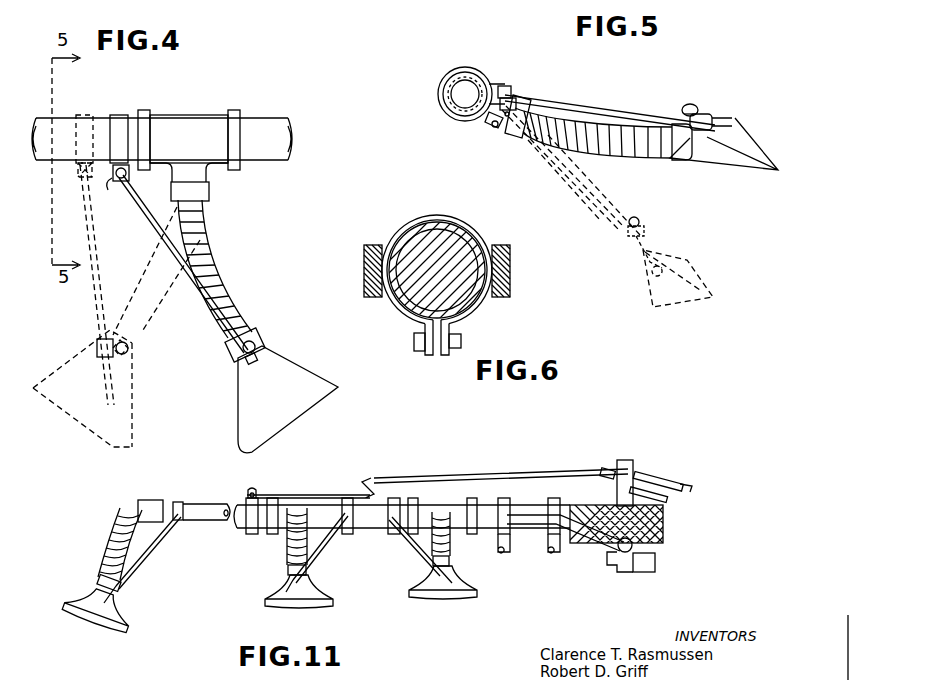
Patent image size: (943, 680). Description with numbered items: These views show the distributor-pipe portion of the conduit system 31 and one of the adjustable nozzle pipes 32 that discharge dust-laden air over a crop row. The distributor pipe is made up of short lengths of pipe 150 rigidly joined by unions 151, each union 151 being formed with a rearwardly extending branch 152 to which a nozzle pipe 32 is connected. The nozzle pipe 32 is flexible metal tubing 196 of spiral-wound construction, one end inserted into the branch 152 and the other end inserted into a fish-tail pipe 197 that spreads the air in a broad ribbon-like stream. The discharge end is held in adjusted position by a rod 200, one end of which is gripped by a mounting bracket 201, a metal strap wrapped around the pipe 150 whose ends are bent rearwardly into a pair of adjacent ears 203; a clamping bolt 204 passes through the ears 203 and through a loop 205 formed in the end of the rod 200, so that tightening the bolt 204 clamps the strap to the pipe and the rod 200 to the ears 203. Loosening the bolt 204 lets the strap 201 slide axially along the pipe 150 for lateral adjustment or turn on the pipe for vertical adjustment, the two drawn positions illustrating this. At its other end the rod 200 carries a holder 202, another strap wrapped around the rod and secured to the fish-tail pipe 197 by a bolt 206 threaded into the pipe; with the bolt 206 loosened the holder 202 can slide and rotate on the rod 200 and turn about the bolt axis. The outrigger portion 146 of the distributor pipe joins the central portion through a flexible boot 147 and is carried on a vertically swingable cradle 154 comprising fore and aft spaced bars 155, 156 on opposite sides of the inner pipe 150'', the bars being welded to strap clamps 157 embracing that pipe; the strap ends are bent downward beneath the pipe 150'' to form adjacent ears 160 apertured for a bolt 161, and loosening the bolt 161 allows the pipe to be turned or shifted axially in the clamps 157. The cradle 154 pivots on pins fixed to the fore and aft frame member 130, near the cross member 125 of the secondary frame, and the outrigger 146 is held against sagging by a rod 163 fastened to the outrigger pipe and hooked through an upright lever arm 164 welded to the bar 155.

In FIG. 4, the conduit system 31 is at (270, 108).
In FIG. 4, the nozzle pipe 32 is at (205, 318).
In FIG. 5, the nozzle pipe 32 is at (643, 160).
In FIG. 11, the nozzle pipe 32 is at (136, 633).
In FIG. 11, the cross member 125 is at (655, 565).
In FIG. 11, the fore and aft extending member 130 is at (624, 570).
In FIG. 11, the outrigger portion 146 is at (470, 603).
In FIG. 11, the flexible boot 147 is at (588, 506).
In FIG. 4, the pipe 150 is at (152, 149).
In FIG. 5, the pipe 150 is at (431, 121).
In FIG. 6, the inner pipe 150'' is at (440, 270).
In FIG. 4, the union 151 is at (188, 128).
In FIG. 5, the union 151 is at (440, 90).
In FIG. 11, the union 151 is at (278, 522).
In FIG. 4, the rearwardly extending branch 152 is at (193, 192).
In FIG. 5, the rearwardly extending branch 152 is at (524, 112).
In FIG. 11, the cradle 154 is at (534, 492).
In FIG. 6, the bar 155 is at (362, 265).
In FIG. 6, the bar 156 is at (510, 282).
In FIG. 6, the clamp 157 is at (448, 220).
In FIG. 6, the ear 160 is at (446, 356).
In FIG. 6, the bolt 161 is at (412, 338).
In FIG. 11, the rod 163 is at (328, 495).
In FIG. 11, the upright lever arm 164 is at (626, 460).
In FIG. 4, the flexible metal tubing 196 is at (214, 265).
In FIG. 5, the flexible metal tubing 196 is at (626, 124).
In FIG. 4, the fish-tail pipe 197 is at (298, 362).
In FIG. 5, the fish-tail pipe 197 is at (735, 124).
In FIG. 11, the fish-tail pipe 197 is at (115, 612).
In FIG. 4, the rod 200 is at (88, 243).
In FIG. 5, the rod 200 is at (590, 110).
In FIG. 4, the mounting bracket 201 is at (118, 118).
In FIG. 5, the mounting bracket 201 is at (448, 68).
In FIG. 4, the holder 202 is at (235, 365).
In FIG. 5, the holder 202 is at (702, 112).
In FIG. 5, the ear 203 is at (512, 126).
In FIG. 4, the clamping bolt 204 is at (126, 176).
In FIG. 5, the clamping bolt 204 is at (504, 82).
In FIG. 4, the loop 205 is at (116, 181).
In FIG. 5, the loop 205 is at (510, 96).
In FIG. 4, the bolt 206 is at (258, 337).
In FIG. 5, the bolt 206 is at (688, 104).